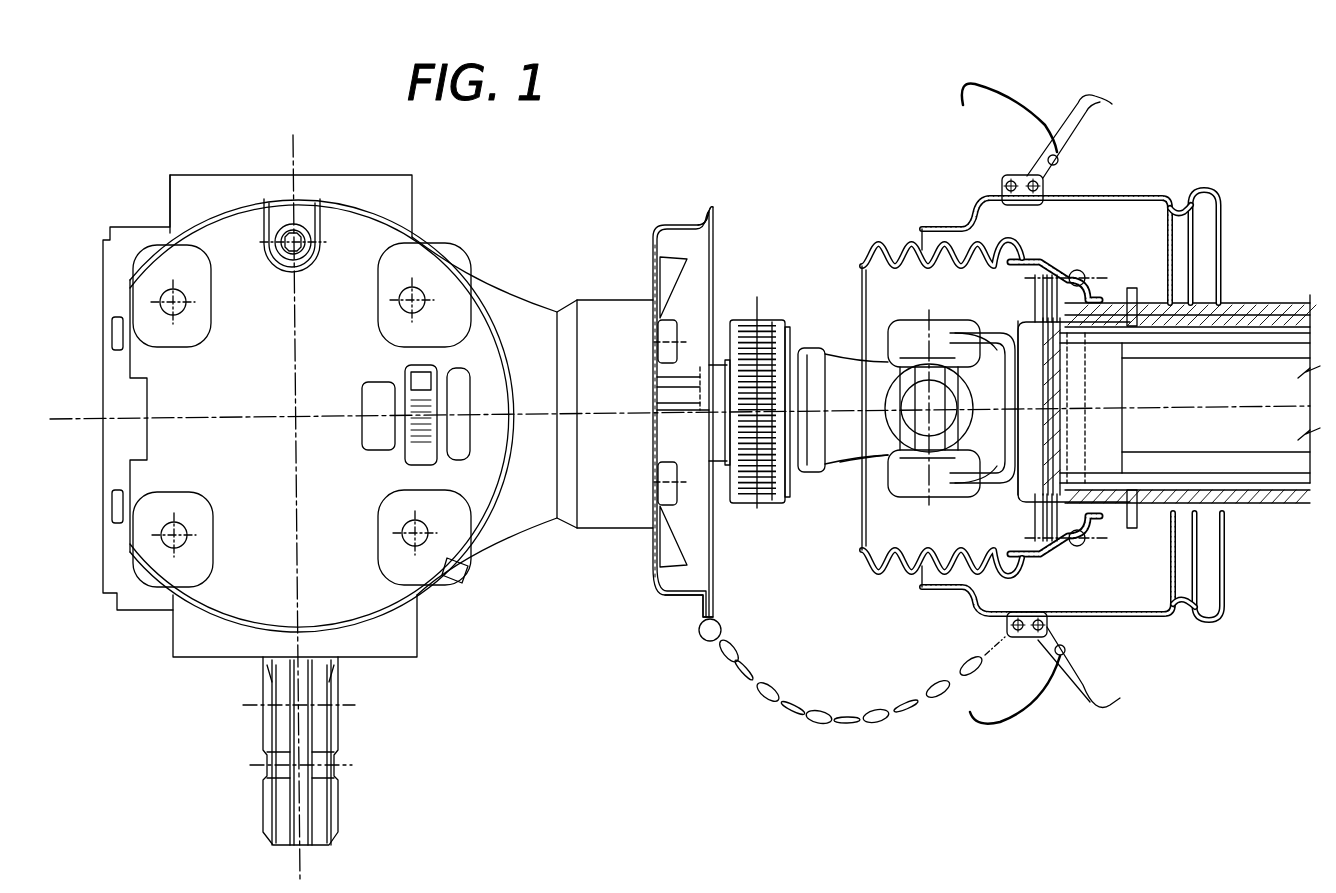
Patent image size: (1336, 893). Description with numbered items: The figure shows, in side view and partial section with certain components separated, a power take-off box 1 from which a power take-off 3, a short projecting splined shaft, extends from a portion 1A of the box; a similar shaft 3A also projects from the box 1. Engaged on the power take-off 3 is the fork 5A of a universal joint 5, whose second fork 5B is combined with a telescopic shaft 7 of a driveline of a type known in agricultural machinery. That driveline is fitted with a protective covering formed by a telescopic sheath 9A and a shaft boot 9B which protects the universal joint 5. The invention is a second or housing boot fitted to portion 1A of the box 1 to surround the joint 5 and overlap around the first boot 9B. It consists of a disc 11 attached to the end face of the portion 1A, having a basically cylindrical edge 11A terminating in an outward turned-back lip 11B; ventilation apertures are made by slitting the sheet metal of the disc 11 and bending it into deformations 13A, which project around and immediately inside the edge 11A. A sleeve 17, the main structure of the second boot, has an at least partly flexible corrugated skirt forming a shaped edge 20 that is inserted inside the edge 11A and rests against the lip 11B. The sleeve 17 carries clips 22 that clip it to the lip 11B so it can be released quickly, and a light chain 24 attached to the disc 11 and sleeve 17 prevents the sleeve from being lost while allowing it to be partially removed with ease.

The power take-off box 1 is at (500, 538).
The portion of the box 1A is at (618, 308).
The power take-off 3 is at (674, 398).
The shaft 3A is at (340, 740).
The universal joint 5 is at (855, 352).
The fork of the universal joint 5A is at (825, 455).
The second fork of the universal joint 5B is at (878, 515).
The telescopic shaft 7 is at (1253, 462).
The telescopic sheath 9A is at (1258, 296).
The shaft boot 9B is at (1076, 568).
The disc 11 is at (653, 226).
The cylindrical edge of the disc 11A is at (680, 597).
The turned-back lip 11B is at (700, 200).
The deformations 13A is at (652, 557).
The sleeve 17 is at (1150, 193).
The shaped edge 20 is at (968, 207).
The clips 22 is at (1056, 150).
The light chain 24 is at (760, 710).